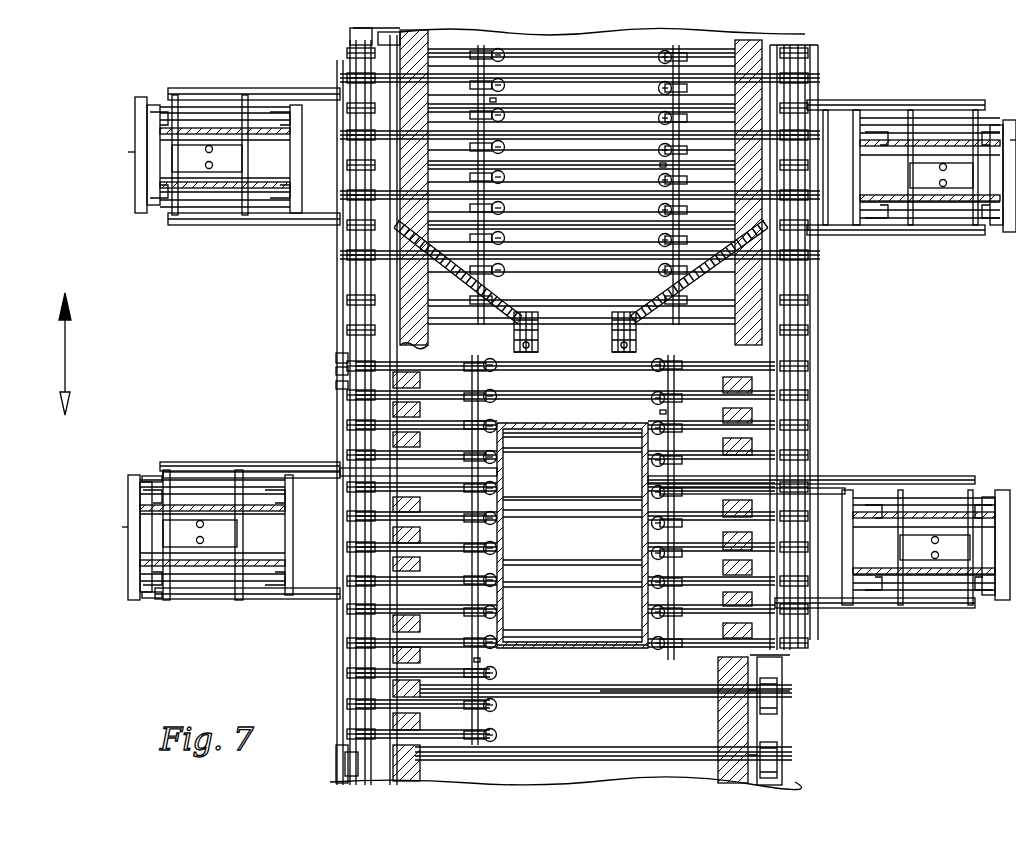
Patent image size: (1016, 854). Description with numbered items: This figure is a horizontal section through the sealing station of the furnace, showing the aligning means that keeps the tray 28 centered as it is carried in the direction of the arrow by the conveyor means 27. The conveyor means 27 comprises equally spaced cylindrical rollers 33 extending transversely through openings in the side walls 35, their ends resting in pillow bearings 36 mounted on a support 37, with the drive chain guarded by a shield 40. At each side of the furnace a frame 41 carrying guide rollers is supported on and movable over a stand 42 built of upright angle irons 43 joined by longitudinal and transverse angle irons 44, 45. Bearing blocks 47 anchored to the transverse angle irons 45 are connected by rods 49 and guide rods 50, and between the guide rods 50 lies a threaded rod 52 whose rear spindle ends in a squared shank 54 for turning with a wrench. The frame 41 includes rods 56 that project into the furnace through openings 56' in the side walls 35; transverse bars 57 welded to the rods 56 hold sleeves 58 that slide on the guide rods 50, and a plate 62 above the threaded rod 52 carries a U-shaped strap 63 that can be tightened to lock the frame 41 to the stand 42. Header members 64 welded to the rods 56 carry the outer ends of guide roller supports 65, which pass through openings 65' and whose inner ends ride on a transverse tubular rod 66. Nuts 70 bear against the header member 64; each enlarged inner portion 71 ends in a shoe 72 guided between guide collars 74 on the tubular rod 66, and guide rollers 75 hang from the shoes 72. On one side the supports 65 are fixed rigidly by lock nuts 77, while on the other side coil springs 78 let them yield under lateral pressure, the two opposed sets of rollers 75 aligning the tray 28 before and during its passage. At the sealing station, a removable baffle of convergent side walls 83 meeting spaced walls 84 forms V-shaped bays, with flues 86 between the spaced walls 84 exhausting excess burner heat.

The conveyor means 27 is at (620, 700).
The tray 28 is at (584, 647).
The cylindrical rollers 33 is at (550, 755).
The side walls 35 is at (392, 45).
The pillow bearings 36 is at (778, 688).
The support 37 is at (768, 722).
The shield 40 is at (338, 755).
The frame 41 is at (205, 96).
The stand 42 is at (158, 98).
The upright angle irons 43 is at (168, 463).
The longitudinal angle irons 44 is at (250, 487).
The transverse angle irons 45 is at (142, 474).
The bearing blocks 47 is at (135, 503).
The rods 49 is at (150, 478).
The guide rods 50 is at (268, 130).
The threaded rod 52 is at (150, 165).
The squared shank 54 is at (130, 152).
The rods 56 is at (570, 360).
The openings 56' is at (449, 531).
The transverse bars 57 is at (167, 137).
The sleeves 58 is at (210, 520).
The plate 62 is at (195, 160).
The U-shaped strap 63 is at (207, 173).
The header members 64 is at (822, 78).
The guide roller supports 65 is at (485, 356).
The openings 65' is at (440, 550).
The tubular rod 66 is at (496, 100).
The nuts 70 is at (342, 358).
The enlarged inner portion 71 is at (718, 552).
The shoe 72 is at (487, 735).
The guide collars 74 is at (500, 594).
The guide rollers 75 is at (505, 148).
The lock nuts 77 is at (795, 402).
The coil springs 78 is at (342, 386).
The convergent side walls 83 is at (510, 302).
The spaced walls 84 is at (538, 337).
The flues 86 is at (525, 346).